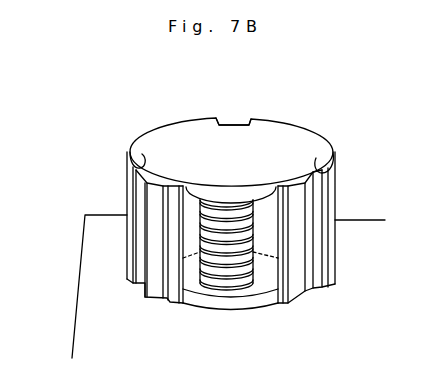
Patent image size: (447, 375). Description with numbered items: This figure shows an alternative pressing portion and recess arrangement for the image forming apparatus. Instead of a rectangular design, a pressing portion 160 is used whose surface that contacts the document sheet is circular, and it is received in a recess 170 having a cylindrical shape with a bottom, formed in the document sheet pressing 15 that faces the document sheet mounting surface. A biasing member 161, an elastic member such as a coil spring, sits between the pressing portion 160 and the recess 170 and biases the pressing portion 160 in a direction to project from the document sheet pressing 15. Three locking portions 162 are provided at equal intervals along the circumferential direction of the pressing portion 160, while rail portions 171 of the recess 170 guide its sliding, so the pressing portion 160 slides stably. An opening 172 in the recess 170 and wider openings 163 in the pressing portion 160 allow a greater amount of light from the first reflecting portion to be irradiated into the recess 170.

The document sheet pressing 15 is at (82, 272).
The pressing portion 160 is at (184, 292).
The biasing member 161 is at (223, 285).
The locking portions 162 is at (132, 217).
The openings 163 is at (259, 279).
The recess 170 is at (185, 120).
The rail portions 171 is at (131, 150).
The opening 172 is at (200, 182).